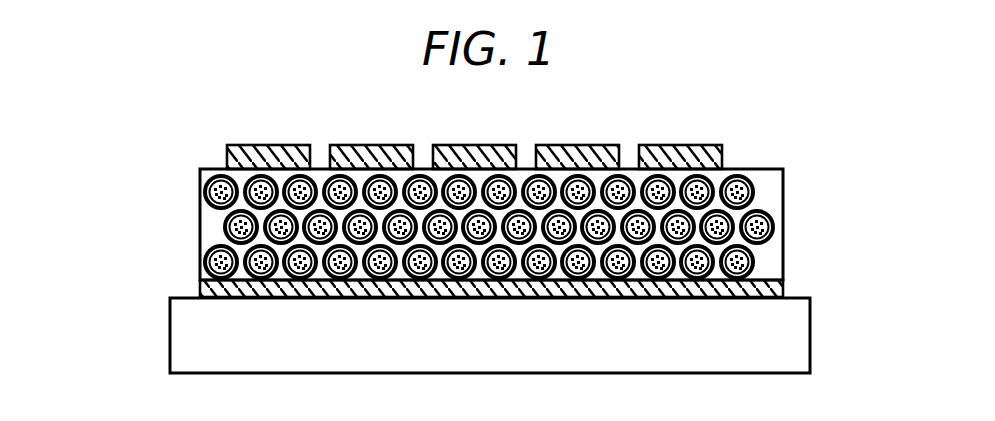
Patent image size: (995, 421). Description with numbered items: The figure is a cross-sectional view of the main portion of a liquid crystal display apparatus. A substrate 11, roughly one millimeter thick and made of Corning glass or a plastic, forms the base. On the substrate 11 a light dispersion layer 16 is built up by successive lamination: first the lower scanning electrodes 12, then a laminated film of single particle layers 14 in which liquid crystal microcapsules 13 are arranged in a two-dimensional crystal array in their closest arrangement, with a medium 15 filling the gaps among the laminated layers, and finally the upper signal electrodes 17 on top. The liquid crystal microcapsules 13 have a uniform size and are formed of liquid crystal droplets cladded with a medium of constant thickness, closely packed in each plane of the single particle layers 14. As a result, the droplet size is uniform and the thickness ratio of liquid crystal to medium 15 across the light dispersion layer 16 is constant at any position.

The substrate 11 is at (812, 326).
The lower scanning electrodes 12 is at (784, 290).
The liquid crystal microcapsules 13 is at (784, 216).
The single particle layers 14 is at (445, 261).
The medium 15 is at (772, 252).
The light dispersion layer 16 is at (453, 221).
The upper signal electrodes 17 is at (714, 145).